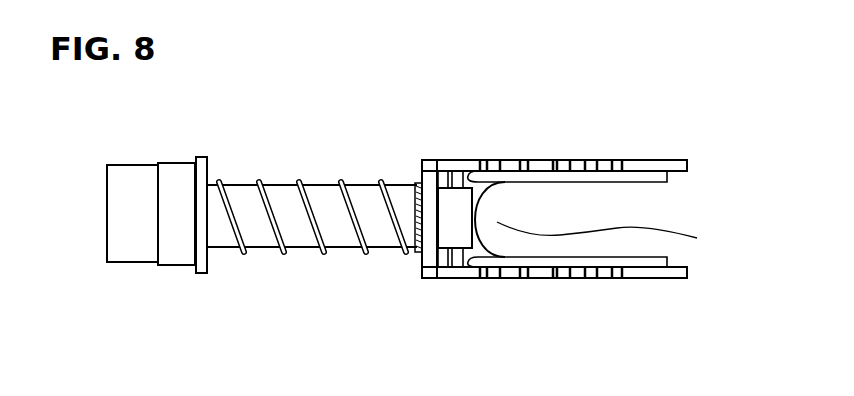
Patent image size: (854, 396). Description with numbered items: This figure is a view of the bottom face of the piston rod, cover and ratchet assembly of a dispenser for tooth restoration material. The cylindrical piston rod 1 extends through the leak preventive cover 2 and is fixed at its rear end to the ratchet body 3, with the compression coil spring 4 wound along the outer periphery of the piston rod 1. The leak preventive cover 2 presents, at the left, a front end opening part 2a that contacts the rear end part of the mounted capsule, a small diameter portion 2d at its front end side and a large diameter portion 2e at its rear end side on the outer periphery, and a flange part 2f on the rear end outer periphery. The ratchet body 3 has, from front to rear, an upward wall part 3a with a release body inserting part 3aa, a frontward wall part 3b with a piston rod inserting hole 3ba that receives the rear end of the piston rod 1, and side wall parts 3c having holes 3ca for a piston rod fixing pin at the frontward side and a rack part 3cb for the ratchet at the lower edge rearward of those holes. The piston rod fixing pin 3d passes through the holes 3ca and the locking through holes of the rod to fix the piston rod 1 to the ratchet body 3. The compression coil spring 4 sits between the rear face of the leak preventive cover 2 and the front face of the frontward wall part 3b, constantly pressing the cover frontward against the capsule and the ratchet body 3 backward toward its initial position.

The piston rod 1 is at (283, 192).
The leak preventive cover 2 is at (148, 165).
The front end opening part 2a is at (107, 215).
The small diameter portion 2d is at (123, 256).
The large diameter portion 2e is at (177, 257).
The flange part 2f is at (205, 160).
The ratchet body 3 is at (562, 229).
The upward wall part 3a is at (658, 186).
The release body inserting part 3aa is at (697, 238).
The frontward wall part 3b is at (416, 166).
The piston rod inserting hole 3ba is at (440, 264).
The side wall part 3c is at (685, 160).
The hole for piston rod fixing pin 3ca is at (477, 163).
The rack part 3cb is at (575, 163).
The piston rod fixing pin 3d is at (457, 262).
The compression coil spring 4 is at (325, 236).